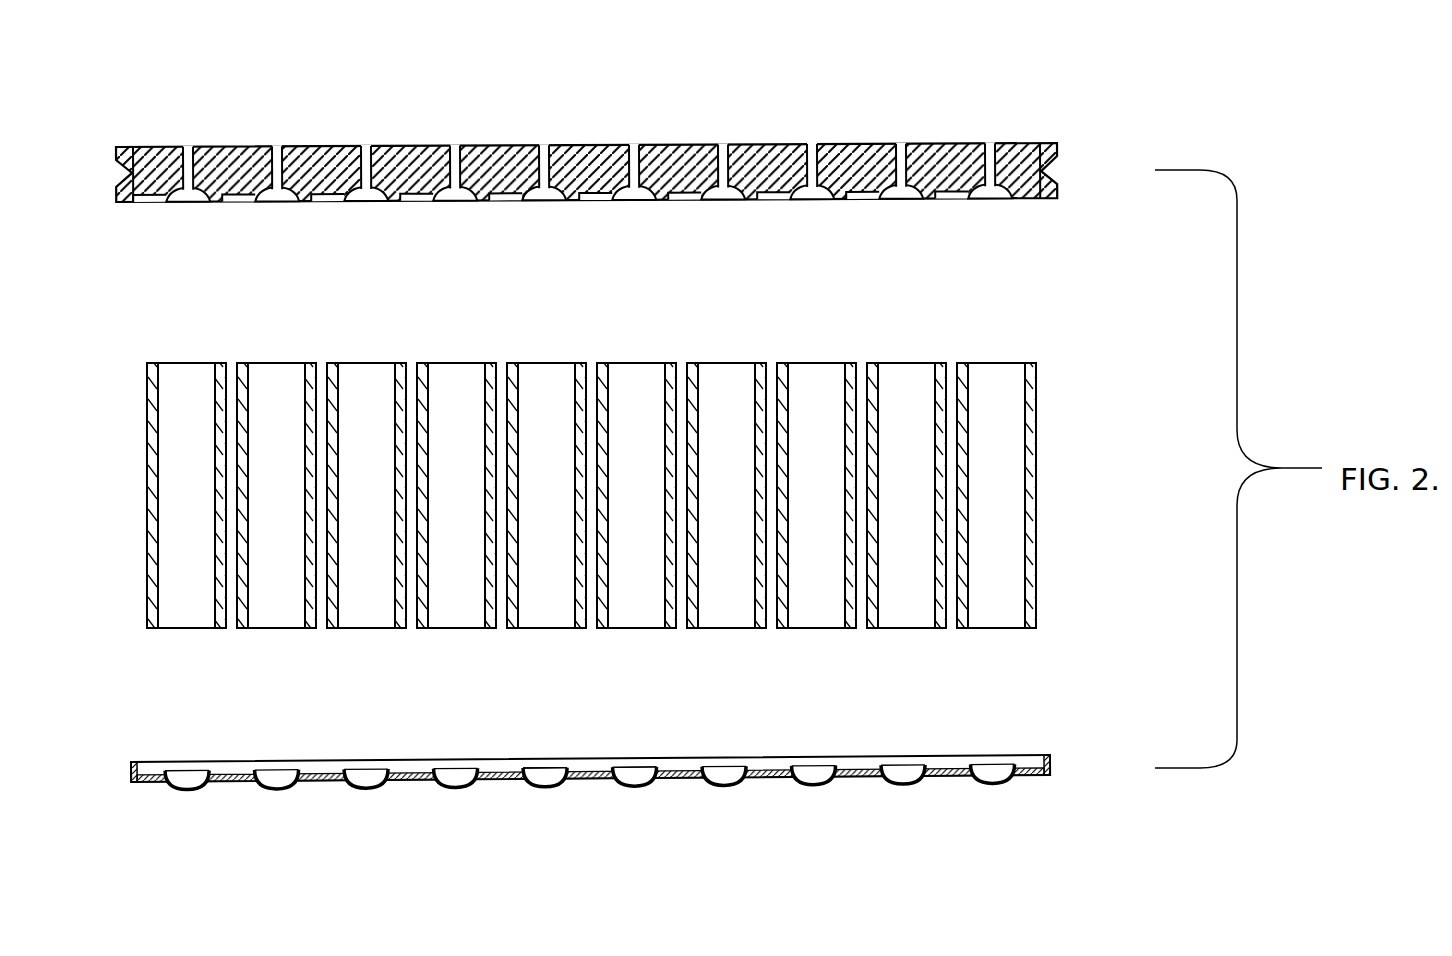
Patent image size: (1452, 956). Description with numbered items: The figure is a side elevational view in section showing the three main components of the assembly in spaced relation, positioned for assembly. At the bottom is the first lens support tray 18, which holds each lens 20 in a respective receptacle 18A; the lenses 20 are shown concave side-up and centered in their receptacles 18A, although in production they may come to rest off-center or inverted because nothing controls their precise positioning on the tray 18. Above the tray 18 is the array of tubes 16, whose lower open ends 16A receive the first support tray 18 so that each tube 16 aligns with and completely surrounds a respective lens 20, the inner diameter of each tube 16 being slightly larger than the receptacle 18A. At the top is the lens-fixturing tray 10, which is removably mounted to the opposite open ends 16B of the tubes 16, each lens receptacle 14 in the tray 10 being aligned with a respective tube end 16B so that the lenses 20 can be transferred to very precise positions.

The lens-fixturing tray 10 is at (635, 167).
The lens receptacle 14 is at (731, 200).
The array of tubes 16 is at (652, 488).
The open ends of tubes 16A is at (965, 630).
The opposite open ends of tubes 16B is at (978, 357).
The first lens support tray 18 is at (652, 773).
The receptacle 18A is at (803, 783).
The lens 20 is at (630, 770).